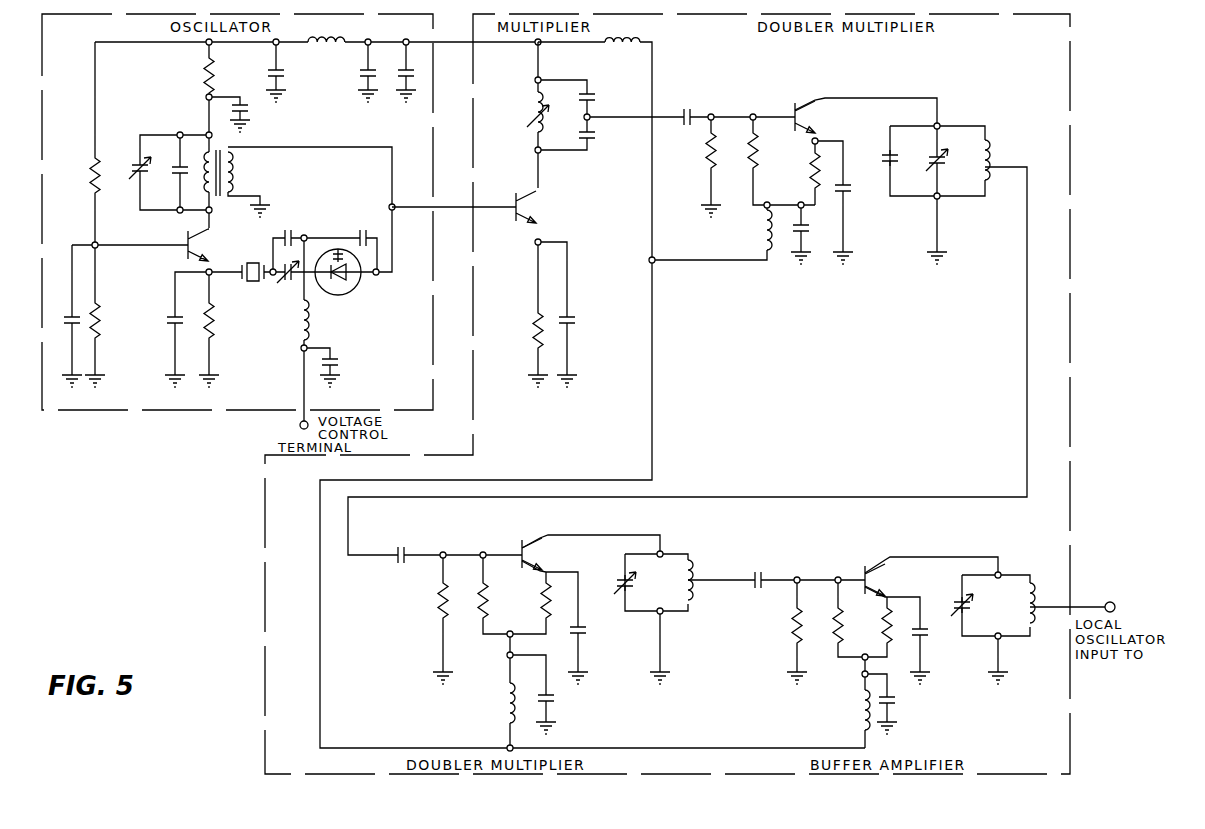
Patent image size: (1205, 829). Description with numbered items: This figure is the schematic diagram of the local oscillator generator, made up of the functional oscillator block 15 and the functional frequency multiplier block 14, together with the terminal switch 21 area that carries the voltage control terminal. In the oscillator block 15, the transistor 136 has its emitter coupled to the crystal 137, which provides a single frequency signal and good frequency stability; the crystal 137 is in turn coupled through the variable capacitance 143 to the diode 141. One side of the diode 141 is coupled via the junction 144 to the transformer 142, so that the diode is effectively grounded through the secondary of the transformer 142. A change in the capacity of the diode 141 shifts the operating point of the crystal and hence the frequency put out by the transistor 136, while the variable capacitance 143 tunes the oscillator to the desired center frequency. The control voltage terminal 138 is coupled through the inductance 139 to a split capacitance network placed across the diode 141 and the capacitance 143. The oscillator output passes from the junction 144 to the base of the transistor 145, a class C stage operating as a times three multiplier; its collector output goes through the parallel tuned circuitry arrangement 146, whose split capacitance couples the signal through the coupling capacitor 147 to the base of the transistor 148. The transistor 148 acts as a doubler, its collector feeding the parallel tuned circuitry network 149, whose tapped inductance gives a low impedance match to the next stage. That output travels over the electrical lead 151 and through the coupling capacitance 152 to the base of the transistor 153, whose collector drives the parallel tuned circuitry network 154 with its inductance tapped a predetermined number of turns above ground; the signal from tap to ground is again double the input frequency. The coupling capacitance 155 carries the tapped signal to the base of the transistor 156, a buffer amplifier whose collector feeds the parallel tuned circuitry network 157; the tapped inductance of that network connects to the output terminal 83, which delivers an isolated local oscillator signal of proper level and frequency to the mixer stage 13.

The mixer stage 13 is at (1113, 668).
The functional frequency multiplier block 14 is at (832, 15).
The functional oscillator block 15 is at (262, 15).
The switch 21 is at (412, 447).
The output terminal 83 is at (1112, 600).
The transistor 136 is at (178, 238).
The crystal 137 is at (247, 265).
The control voltage terminal 138 is at (300, 425).
The inductance 139 is at (302, 330).
The diode 141 is at (365, 288).
The transformer 142 is at (244, 170).
The variable capacitance 143 is at (290, 293).
The junction 144 is at (394, 204).
The transistor 145 is at (522, 186).
The parallel tuned circuitry arrangement 146 is at (578, 79).
The coupling capacitor 147 is at (692, 110).
The transistor 148 is at (805, 89).
The parallel tuned circuitry network 149 is at (957, 110).
The electrical lead 151 is at (1025, 306).
The coupling capacitance 152 is at (395, 550).
The transistor 153 is at (512, 540).
The parallel tuned circuitry network 154 is at (693, 547).
The coupling capacitance 155 is at (760, 574).
The transistor 156 is at (871, 551).
The parallel tuned circuitry network 157 is at (1007, 565).